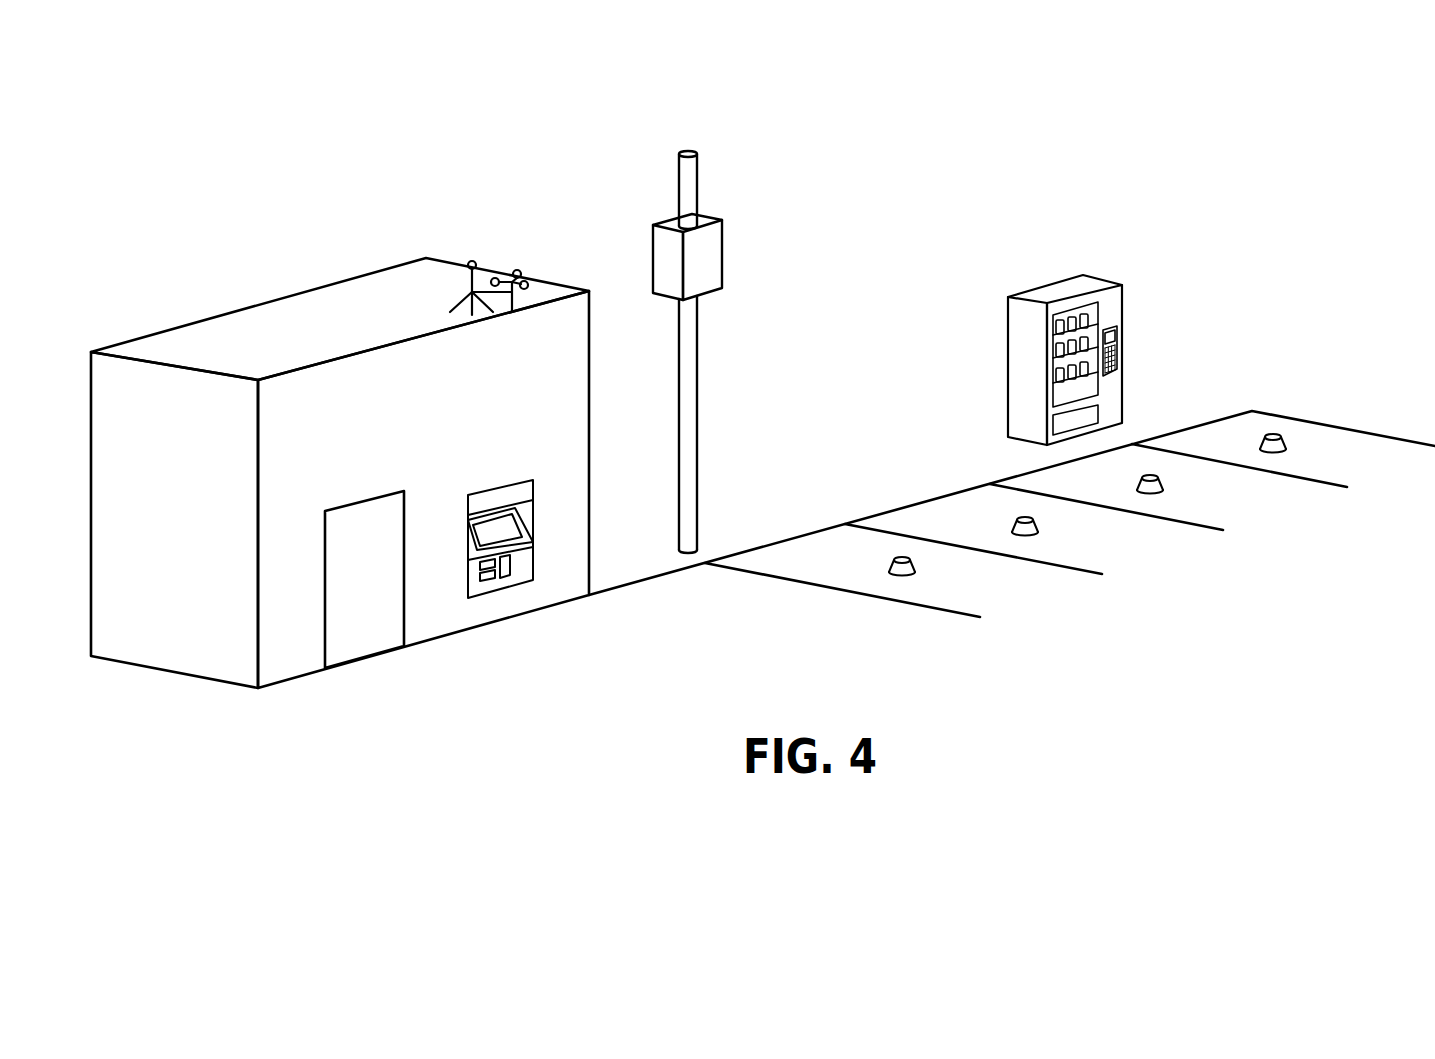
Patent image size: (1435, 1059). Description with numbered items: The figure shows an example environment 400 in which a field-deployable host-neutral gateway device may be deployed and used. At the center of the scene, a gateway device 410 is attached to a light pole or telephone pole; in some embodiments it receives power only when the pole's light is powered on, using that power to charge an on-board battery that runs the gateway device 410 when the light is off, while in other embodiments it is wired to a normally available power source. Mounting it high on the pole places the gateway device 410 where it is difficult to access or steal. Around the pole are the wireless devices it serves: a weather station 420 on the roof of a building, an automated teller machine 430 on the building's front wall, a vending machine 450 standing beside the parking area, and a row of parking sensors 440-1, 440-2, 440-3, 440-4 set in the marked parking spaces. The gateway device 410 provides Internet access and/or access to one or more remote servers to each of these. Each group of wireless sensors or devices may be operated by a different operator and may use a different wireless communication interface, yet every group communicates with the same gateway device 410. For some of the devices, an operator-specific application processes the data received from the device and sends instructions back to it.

The environment 400 is at (1272, 632).
The gateway device 410 is at (722, 235).
The weather station 420 is at (520, 271).
The automated teller machine 430 is at (523, 478).
The parking sensor 440-1 is at (914, 565).
The parking sensor 440-2 is at (1037, 525).
The parking sensor 440-3 is at (1162, 483).
The parking sensor 440-4 is at (1286, 440).
The vending machine 450 is at (1122, 318).